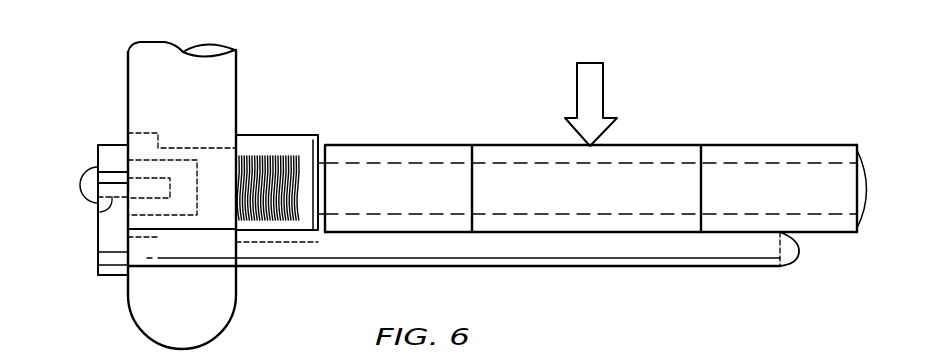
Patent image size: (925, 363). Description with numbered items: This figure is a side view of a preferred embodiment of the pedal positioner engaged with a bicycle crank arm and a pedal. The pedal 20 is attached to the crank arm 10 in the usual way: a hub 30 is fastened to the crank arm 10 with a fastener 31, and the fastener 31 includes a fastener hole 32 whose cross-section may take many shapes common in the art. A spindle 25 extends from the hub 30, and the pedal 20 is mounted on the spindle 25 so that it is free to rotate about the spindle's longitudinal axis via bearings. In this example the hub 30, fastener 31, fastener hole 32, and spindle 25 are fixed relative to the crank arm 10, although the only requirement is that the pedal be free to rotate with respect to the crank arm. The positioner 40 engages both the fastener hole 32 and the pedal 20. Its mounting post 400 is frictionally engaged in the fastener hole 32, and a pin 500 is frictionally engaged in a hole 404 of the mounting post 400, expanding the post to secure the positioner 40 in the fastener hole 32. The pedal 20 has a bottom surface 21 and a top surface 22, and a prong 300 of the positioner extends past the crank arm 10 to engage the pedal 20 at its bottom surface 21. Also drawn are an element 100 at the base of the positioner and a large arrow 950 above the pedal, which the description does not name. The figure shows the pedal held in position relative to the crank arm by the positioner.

The crank arm 10 is at (127, 70).
The positioner 40 is at (110, 145).
The base 100 is at (93, 247).
The pin 500 is at (86, 188).
The hole 404 is at (97, 218).
The mounting post 400 is at (203, 193).
The fastener hole 32 is at (192, 168).
The fastener 31 is at (258, 158).
The hub 30 is at (300, 135).
The pedal 20 is at (406, 158).
The bottom surface 21 is at (600, 232).
The spindle 25 is at (450, 163).
The top surface 22 is at (777, 147).
The applied force 950 is at (575, 92).
The prong 300 is at (567, 267).